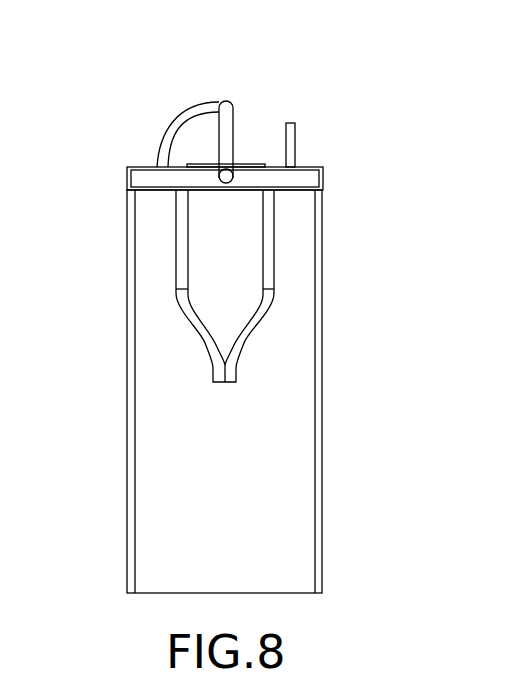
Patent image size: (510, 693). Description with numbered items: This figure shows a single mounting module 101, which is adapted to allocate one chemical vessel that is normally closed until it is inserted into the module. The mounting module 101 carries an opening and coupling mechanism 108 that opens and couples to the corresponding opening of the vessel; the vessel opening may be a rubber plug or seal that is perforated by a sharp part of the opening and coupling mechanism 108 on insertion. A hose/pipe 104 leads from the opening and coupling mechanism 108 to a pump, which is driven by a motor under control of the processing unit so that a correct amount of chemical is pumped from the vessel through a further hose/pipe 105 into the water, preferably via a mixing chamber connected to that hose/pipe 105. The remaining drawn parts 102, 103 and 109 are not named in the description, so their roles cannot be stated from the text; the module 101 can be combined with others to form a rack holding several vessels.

The mounting module 101 is at (126, 535).
The connection portion 102 is at (234, 104).
The tube 103 is at (233, 150).
The hose/pipe 104 is at (178, 109).
The hose/pipe 105 is at (297, 127).
The opening and coupling mechanism 108 is at (243, 355).
The cap 109 is at (303, 463).